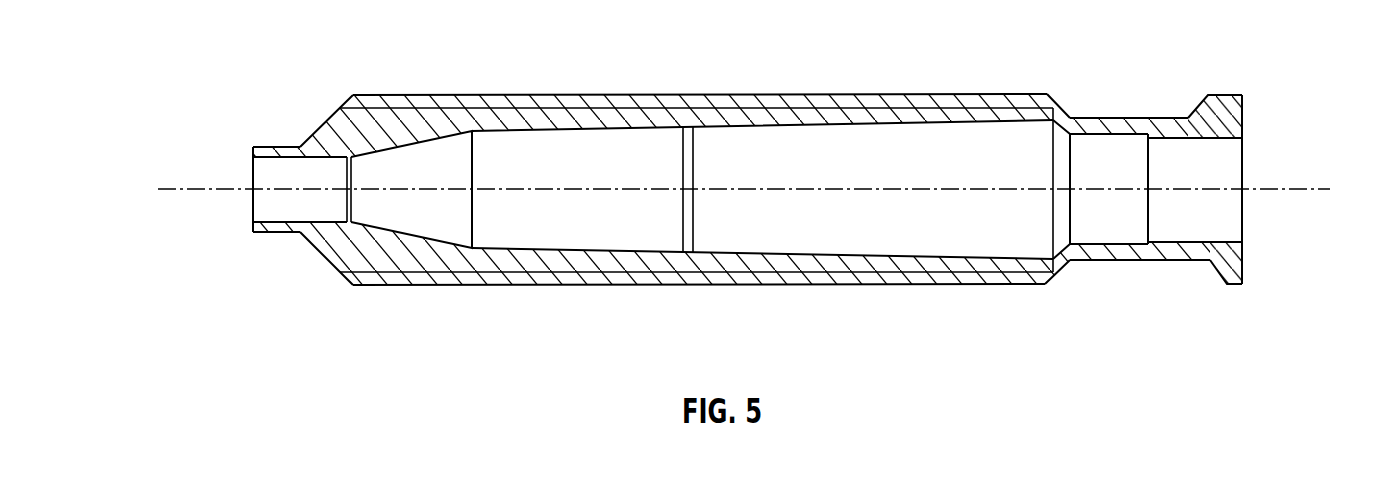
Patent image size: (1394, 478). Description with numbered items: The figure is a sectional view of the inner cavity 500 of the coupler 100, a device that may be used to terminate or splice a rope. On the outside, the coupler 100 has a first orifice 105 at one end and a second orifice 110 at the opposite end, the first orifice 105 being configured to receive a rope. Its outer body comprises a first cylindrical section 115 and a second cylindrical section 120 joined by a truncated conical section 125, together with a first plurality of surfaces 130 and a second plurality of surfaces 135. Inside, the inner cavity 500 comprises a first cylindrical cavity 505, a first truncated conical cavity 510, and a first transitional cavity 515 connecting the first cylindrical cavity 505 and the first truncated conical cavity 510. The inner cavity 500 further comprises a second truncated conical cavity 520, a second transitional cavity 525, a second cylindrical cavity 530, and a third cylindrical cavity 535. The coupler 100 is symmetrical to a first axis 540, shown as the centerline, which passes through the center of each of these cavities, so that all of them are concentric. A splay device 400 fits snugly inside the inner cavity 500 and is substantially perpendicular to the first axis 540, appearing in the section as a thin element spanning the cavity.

The coupler 100 is at (186, 46).
The first orifice 105 is at (234, 209).
The second orifice 110 is at (1282, 227).
The first cylindrical section 115 is at (270, 147).
The second cylindrical section 120 is at (577, 94).
The truncated conical section 125 is at (335, 127).
The first plurality of surfaces 130 is at (1153, 118).
The second plurality of surfaces 135 is at (1060, 112).
The splay device 400 is at (687, 127).
The inner cavity 500 is at (906, 164).
The first cylindrical cavity 505 is at (292, 212).
The first truncated conical cavity 510 is at (398, 222).
The first transitional cavity 515 is at (350, 223).
The second truncated conical cavity 520 is at (638, 238).
The second transitional cavity 525 is at (1060, 237).
The second cylindrical cavity 530 is at (1113, 240).
The third cylindrical cavity 535 is at (1200, 230).
The first axis 540 is at (185, 187).